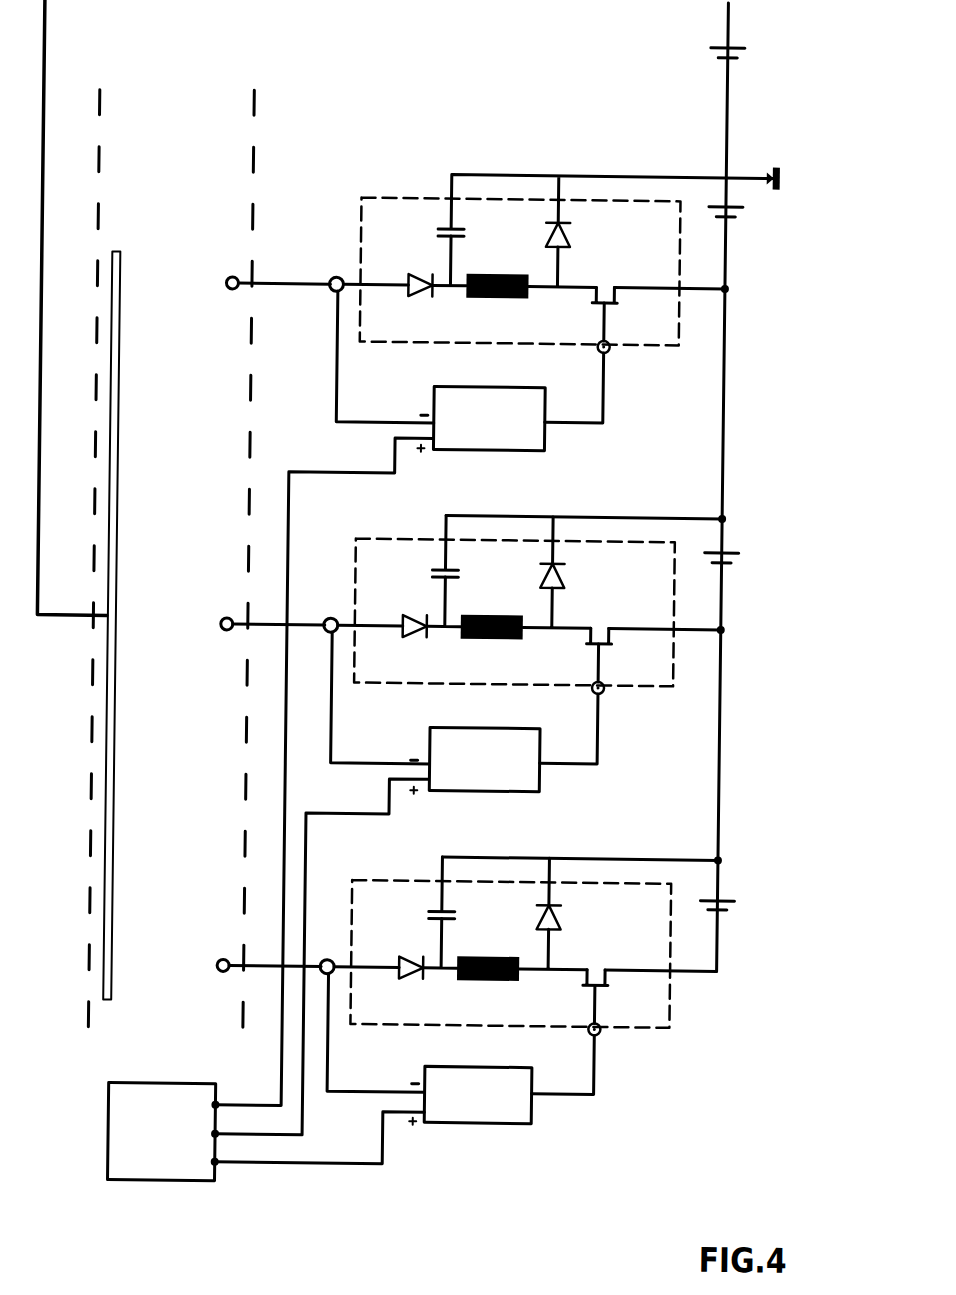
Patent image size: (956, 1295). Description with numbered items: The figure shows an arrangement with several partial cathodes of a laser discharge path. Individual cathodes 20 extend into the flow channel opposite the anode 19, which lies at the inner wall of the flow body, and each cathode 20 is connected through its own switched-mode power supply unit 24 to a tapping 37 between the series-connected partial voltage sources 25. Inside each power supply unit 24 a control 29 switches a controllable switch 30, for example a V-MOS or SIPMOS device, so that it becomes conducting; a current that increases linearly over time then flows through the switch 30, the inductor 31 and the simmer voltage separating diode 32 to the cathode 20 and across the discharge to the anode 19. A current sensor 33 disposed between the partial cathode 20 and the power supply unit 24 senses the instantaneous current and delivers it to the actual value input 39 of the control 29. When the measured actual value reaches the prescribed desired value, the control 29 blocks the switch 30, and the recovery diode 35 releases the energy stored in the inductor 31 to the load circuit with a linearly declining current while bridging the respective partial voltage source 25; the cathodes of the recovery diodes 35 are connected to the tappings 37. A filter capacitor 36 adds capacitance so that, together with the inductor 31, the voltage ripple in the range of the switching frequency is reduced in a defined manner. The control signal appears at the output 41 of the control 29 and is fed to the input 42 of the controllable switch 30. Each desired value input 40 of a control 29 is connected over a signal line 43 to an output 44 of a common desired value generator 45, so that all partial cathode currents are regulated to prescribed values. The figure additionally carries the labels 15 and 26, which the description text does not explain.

The boundary line 15 is at (93, 735).
The anode 19 is at (108, 878).
The cathode 20 is at (230, 276).
The switched-mode power supply unit 24 is at (378, 199).
The partial voltage source 25 is at (733, 37).
The voltage source 26 is at (737, 215).
The control 29 is at (528, 440).
The controllable switch 30 is at (614, 310).
The inductor 31 is at (486, 272).
The simmer voltage separating diode 32 is at (416, 298).
The current sensor 33 is at (332, 277).
The recovery diode 35 is at (568, 237).
The filter capacitor 36 is at (438, 230).
The tapping 37 is at (734, 512).
The actual value input 39 is at (405, 419).
The desired value input 40 is at (410, 441).
The output 41 is at (547, 421).
The input 42 is at (604, 350).
The signal line 43 is at (274, 1109).
The output 44 is at (223, 1110).
The desired value generator 45 is at (130, 1154).